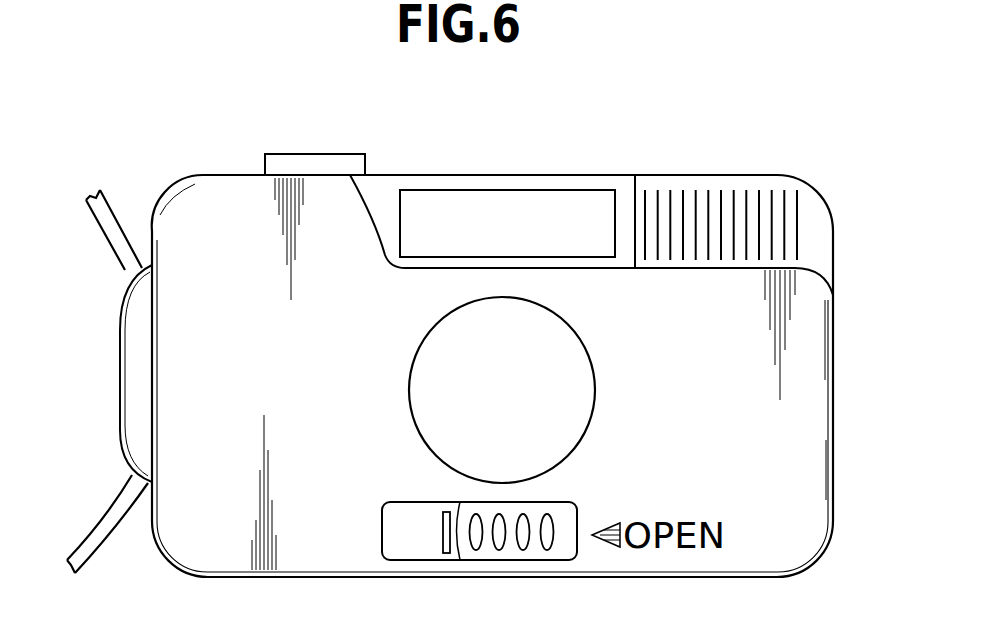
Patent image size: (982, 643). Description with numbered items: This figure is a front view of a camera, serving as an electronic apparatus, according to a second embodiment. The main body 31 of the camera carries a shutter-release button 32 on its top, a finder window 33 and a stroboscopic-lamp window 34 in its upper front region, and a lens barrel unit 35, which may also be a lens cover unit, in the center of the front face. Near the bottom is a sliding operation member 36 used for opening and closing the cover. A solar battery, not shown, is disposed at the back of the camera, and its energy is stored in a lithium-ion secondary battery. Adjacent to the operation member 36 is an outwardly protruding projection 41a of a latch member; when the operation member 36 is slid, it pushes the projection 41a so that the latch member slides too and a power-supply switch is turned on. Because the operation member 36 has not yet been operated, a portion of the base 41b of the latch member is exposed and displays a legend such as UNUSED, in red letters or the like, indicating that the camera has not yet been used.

The main body 31 is at (818, 521).
The shutter-release button 32 is at (312, 152).
The finder window 33 is at (533, 186).
The stroboscopic-lamp window 34 is at (770, 220).
The lens barrel unit 35 is at (585, 382).
The operation member 36 is at (540, 513).
The projection 41a is at (440, 518).
The base 41b is at (390, 548).